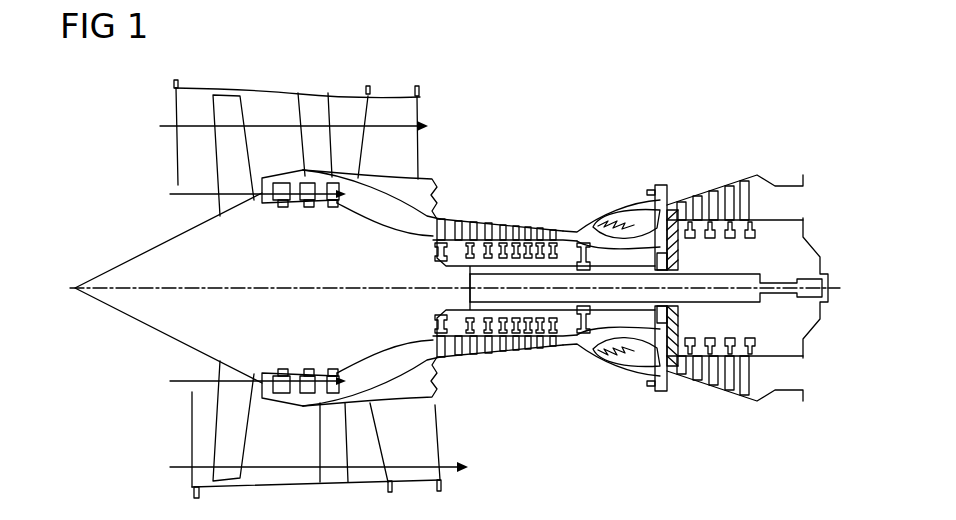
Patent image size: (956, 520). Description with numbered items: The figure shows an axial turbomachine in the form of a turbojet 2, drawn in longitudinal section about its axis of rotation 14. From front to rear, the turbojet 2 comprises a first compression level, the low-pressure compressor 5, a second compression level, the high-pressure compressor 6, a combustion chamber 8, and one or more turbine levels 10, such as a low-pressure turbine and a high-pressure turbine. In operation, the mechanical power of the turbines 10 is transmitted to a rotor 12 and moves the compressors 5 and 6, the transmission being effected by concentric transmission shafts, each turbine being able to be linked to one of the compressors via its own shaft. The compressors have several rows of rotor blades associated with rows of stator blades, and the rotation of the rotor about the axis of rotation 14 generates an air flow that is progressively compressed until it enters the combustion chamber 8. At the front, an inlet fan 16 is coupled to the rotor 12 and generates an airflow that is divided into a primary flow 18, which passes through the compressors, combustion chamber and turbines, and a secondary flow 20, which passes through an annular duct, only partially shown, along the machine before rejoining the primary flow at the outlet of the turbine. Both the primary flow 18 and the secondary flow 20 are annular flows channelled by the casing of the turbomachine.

The turbojet 2 is at (612, 108).
The low-pressure compressor 5 is at (281, 207).
The high-pressure compressor 6 is at (478, 227).
The combustion chamber 8 is at (593, 221).
The turbine levels 10 is at (736, 203).
The rotor 12 is at (150, 314).
The axis of rotation 14 is at (313, 290).
The inlet fan 16 is at (231, 150).
The primary flow 18 is at (243, 288).
The secondary flow 20 is at (301, 296).